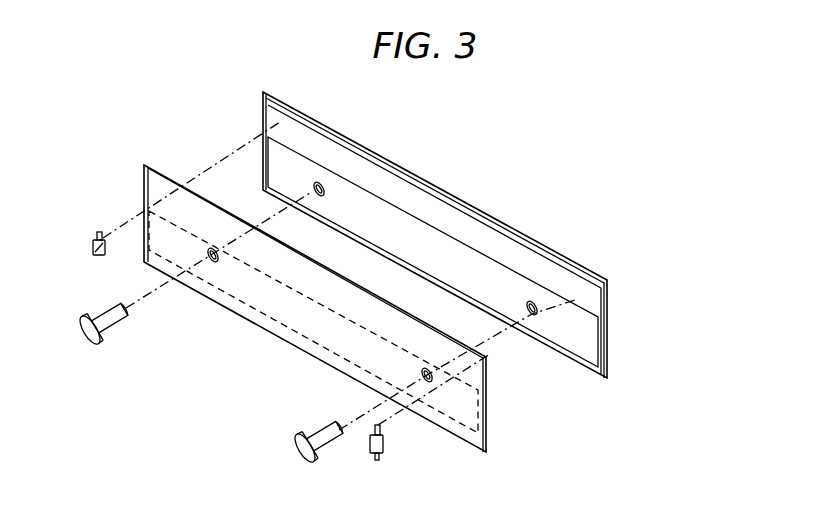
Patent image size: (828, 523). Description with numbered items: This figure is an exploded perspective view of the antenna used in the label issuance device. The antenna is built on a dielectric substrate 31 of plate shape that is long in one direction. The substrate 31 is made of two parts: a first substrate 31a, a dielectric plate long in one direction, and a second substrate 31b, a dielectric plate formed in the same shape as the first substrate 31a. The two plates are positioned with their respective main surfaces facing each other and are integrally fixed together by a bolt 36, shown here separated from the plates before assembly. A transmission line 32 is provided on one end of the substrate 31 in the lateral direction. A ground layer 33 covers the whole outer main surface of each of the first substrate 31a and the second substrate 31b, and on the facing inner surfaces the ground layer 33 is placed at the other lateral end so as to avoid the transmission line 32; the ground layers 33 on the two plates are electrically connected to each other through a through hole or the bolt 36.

The substrate 31 is at (712, 310).
The first substrate 31a is at (608, 302).
The second substrate 31b is at (490, 418).
The transmission line 32 is at (479, 221).
The ground layer 33 is at (585, 347).
The bolt 36 is at (91, 337).